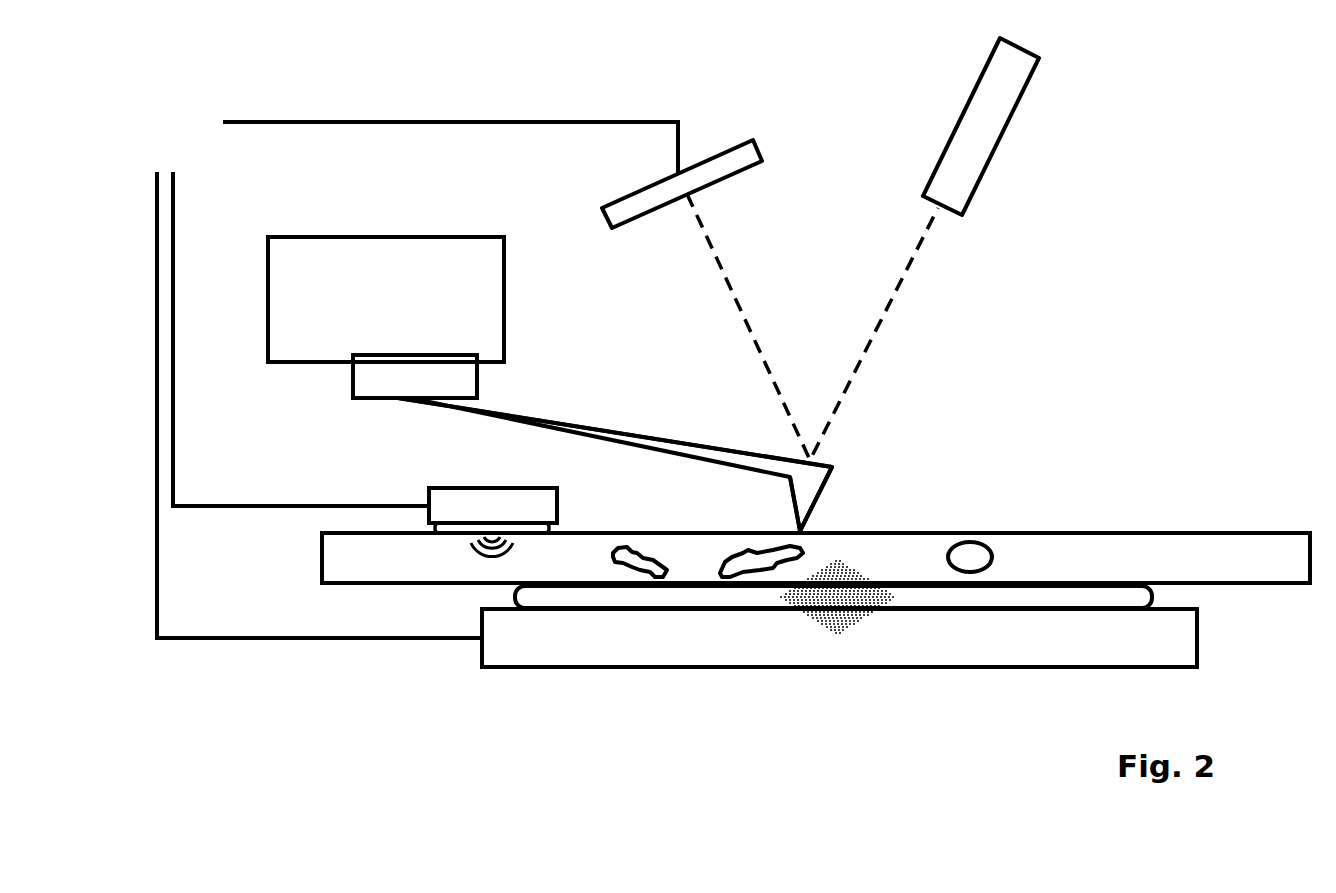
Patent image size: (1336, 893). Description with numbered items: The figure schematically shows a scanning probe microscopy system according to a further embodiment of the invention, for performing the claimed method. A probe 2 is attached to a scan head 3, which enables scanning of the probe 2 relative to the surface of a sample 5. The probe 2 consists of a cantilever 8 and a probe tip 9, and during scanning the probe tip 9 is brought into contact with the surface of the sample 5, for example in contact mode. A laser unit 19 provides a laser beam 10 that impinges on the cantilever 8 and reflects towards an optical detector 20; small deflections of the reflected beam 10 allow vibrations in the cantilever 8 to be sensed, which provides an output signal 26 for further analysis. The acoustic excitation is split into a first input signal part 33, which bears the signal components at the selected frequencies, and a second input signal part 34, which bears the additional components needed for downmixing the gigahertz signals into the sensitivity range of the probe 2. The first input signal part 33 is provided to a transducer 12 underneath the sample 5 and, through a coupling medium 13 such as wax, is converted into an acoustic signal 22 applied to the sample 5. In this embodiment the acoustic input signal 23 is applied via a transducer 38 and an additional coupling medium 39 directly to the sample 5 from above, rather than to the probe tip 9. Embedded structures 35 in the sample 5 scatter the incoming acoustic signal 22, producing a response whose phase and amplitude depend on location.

The probe 2 is at (583, 420).
The scan head 3 is at (363, 237).
The sample 5 is at (1127, 533).
The cantilever 8 is at (710, 440).
The probe tip 9 is at (817, 510).
The laser beam 10 is at (884, 318).
The transducer 12 is at (570, 668).
The coupling medium 13 is at (1155, 592).
The laser unit 19 is at (1005, 130).
The optical detector 20 is at (727, 177).
The acoustic signal 22 is at (848, 570).
The acoustic input signal 23 is at (480, 555).
The output signal 26 is at (514, 122).
The first input signal part 33 is at (246, 638).
The second input signal part 34 is at (226, 506).
The embedded structures 35 is at (653, 556).
The transducer 38 is at (448, 488).
The additional coupling medium 39 is at (553, 528).